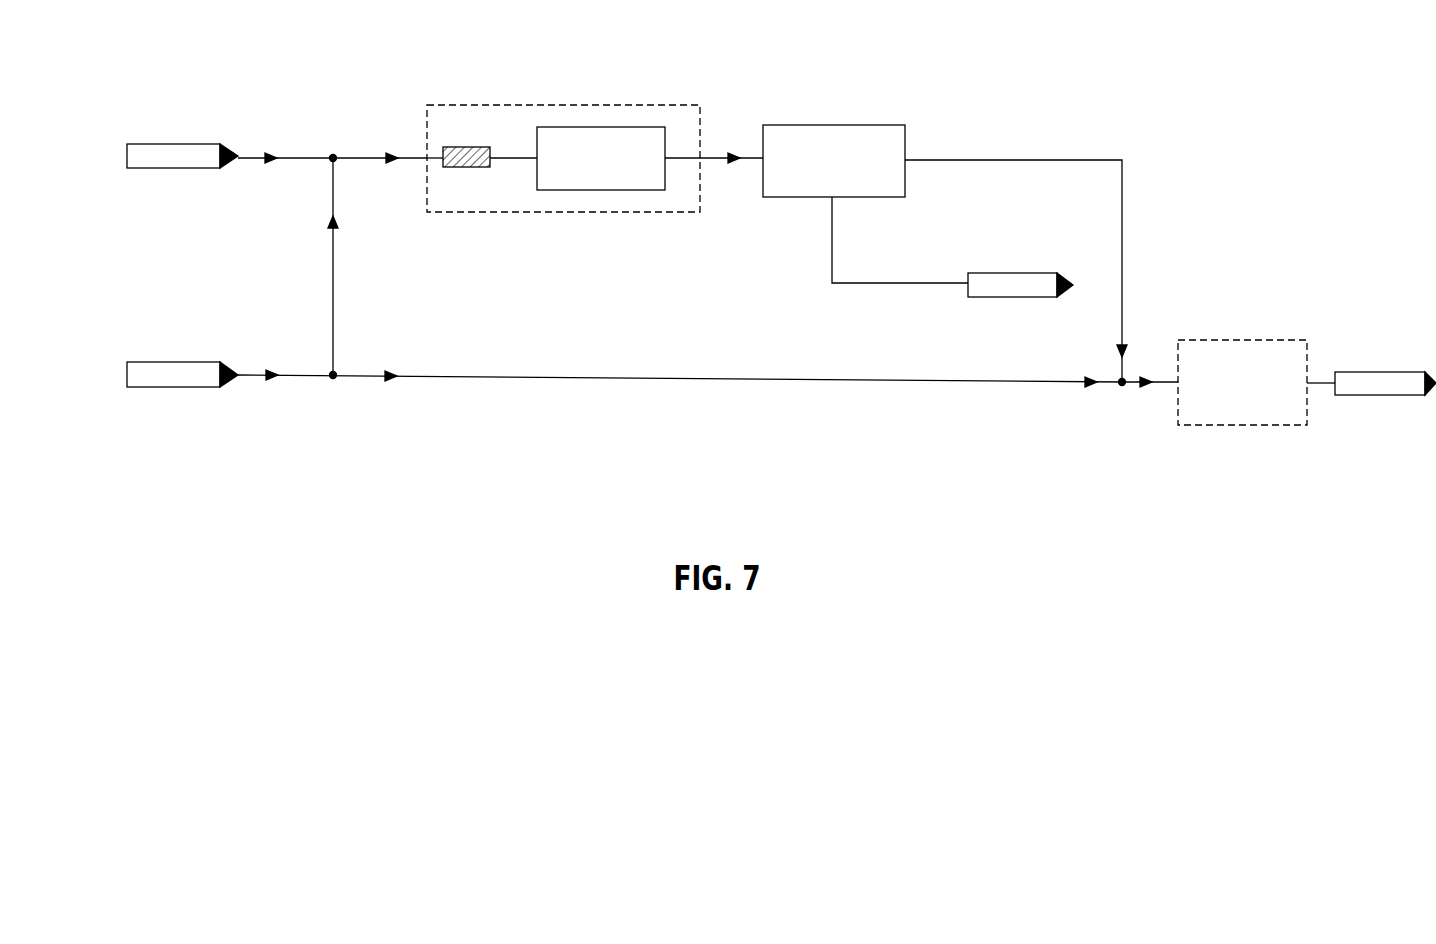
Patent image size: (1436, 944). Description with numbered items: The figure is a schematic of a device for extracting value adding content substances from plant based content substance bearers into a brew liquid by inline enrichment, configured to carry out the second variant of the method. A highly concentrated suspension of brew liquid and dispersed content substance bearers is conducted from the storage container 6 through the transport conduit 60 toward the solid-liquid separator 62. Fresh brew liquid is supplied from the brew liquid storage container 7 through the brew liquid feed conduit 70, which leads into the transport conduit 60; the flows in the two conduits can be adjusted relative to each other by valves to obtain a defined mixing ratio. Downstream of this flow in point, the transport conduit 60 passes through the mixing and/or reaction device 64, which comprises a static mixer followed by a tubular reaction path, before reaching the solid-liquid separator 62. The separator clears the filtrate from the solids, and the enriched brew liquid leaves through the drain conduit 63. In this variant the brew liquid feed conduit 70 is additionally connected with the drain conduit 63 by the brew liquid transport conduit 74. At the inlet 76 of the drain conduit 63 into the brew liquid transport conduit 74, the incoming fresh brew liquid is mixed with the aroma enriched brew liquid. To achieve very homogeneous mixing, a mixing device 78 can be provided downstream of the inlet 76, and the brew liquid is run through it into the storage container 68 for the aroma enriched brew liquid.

The storage container 6 is at (173, 138).
The brew liquid storage container 7 is at (165, 352).
The transport conduit 60 is at (307, 157).
The solid-liquid separator 62 is at (842, 116).
The drain conduit 63 is at (1022, 160).
The mixing and/or reaction device 64 is at (575, 96).
The storage container for the filtrate 68 is at (1380, 362).
The brew liquid feed conduit 70 is at (296, 375).
The brew liquid transport conduit 74 is at (706, 378).
The inlet 76 is at (1122, 385).
The mixing device 78 is at (1232, 330).